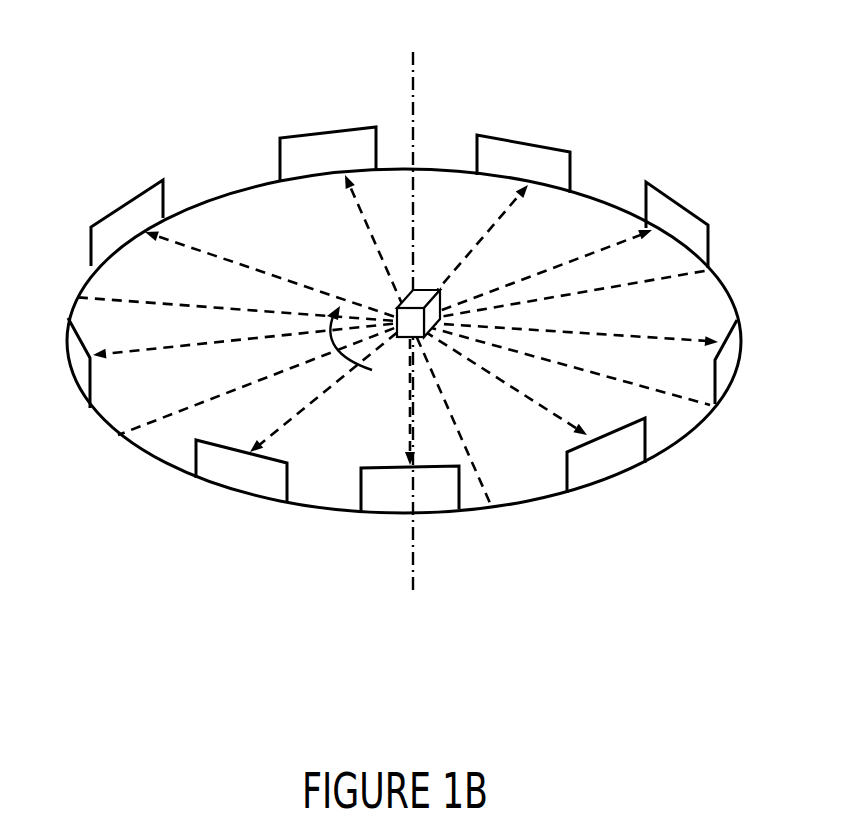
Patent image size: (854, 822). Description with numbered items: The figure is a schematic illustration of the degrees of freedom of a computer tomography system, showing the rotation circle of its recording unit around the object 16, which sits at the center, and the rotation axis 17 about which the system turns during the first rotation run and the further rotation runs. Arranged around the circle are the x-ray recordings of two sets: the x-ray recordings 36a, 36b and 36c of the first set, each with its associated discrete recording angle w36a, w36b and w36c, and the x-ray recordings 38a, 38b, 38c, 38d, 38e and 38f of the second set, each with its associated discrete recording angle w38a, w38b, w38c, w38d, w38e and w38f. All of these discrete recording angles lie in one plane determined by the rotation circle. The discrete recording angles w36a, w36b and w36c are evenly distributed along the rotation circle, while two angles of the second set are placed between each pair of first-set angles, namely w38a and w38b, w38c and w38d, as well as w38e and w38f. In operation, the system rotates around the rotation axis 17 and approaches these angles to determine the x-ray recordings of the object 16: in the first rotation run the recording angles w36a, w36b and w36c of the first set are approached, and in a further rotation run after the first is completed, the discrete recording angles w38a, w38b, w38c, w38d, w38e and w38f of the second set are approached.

The object 16 is at (425, 292).
The rotation axis 17 is at (412, 590).
The x-ray recording 36a is at (427, 513).
The x-ray recording 36b is at (127, 203).
The x-ray recording 36c is at (678, 203).
The x-ray recording 38a is at (730, 365).
The x-ray recording 38b is at (627, 457).
The x-ray recording 38c is at (230, 492).
The x-ray recording 38d is at (72, 387).
The x-ray recording 38e is at (323, 130).
The x-ray recording 38f is at (542, 147).
The discrete recording angle w36a is at (408, 460).
The discrete recording angle w36b is at (177, 242).
The discrete recording angle w36c is at (618, 243).
The discrete recording angle w38a is at (703, 340).
The discrete recording angle w38b is at (575, 440).
The discrete recording angle w38c is at (297, 413).
The discrete recording angle w38d is at (128, 350).
The discrete recording angle w38e is at (358, 213).
The discrete recording angle w38f is at (503, 217).